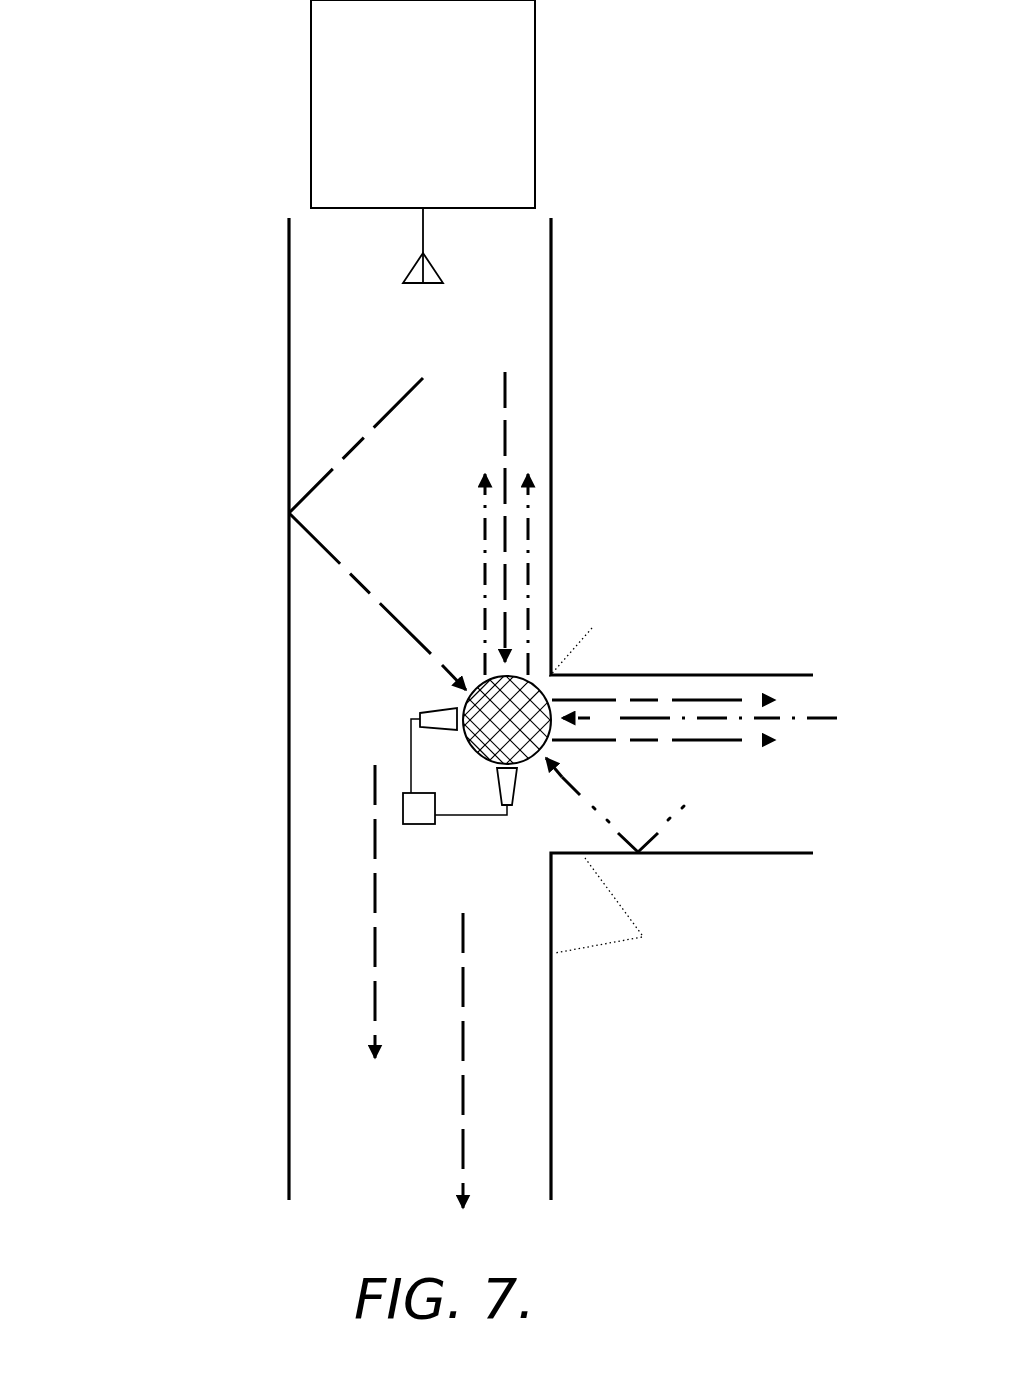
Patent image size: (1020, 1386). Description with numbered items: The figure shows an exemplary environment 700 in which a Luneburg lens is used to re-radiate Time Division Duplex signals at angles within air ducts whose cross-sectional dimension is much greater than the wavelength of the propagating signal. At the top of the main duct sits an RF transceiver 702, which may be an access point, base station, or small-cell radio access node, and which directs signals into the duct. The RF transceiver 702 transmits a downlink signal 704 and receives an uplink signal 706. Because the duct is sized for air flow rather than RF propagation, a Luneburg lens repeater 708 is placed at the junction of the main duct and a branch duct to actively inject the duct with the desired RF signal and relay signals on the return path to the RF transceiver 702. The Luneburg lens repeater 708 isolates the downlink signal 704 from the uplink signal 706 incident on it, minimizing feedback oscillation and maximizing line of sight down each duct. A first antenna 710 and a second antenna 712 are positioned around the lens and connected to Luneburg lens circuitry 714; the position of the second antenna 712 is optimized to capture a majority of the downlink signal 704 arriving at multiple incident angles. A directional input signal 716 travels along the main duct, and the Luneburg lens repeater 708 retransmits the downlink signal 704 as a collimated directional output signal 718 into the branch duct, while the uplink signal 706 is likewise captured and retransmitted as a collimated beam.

The environment 700 is at (162, 82).
The RF transceiver 702 is at (307, 112).
The downlink signal 704 is at (342, 453).
The uplink signal 706 is at (660, 842).
The Luneburg lens repeater 708 is at (546, 688).
The first antenna 710 is at (432, 708).
The second antenna 712 is at (490, 782).
The Luneburg lens circuitry 714 is at (400, 822).
The directional input signal 716 is at (520, 582).
The directional output signal 718 is at (764, 686).